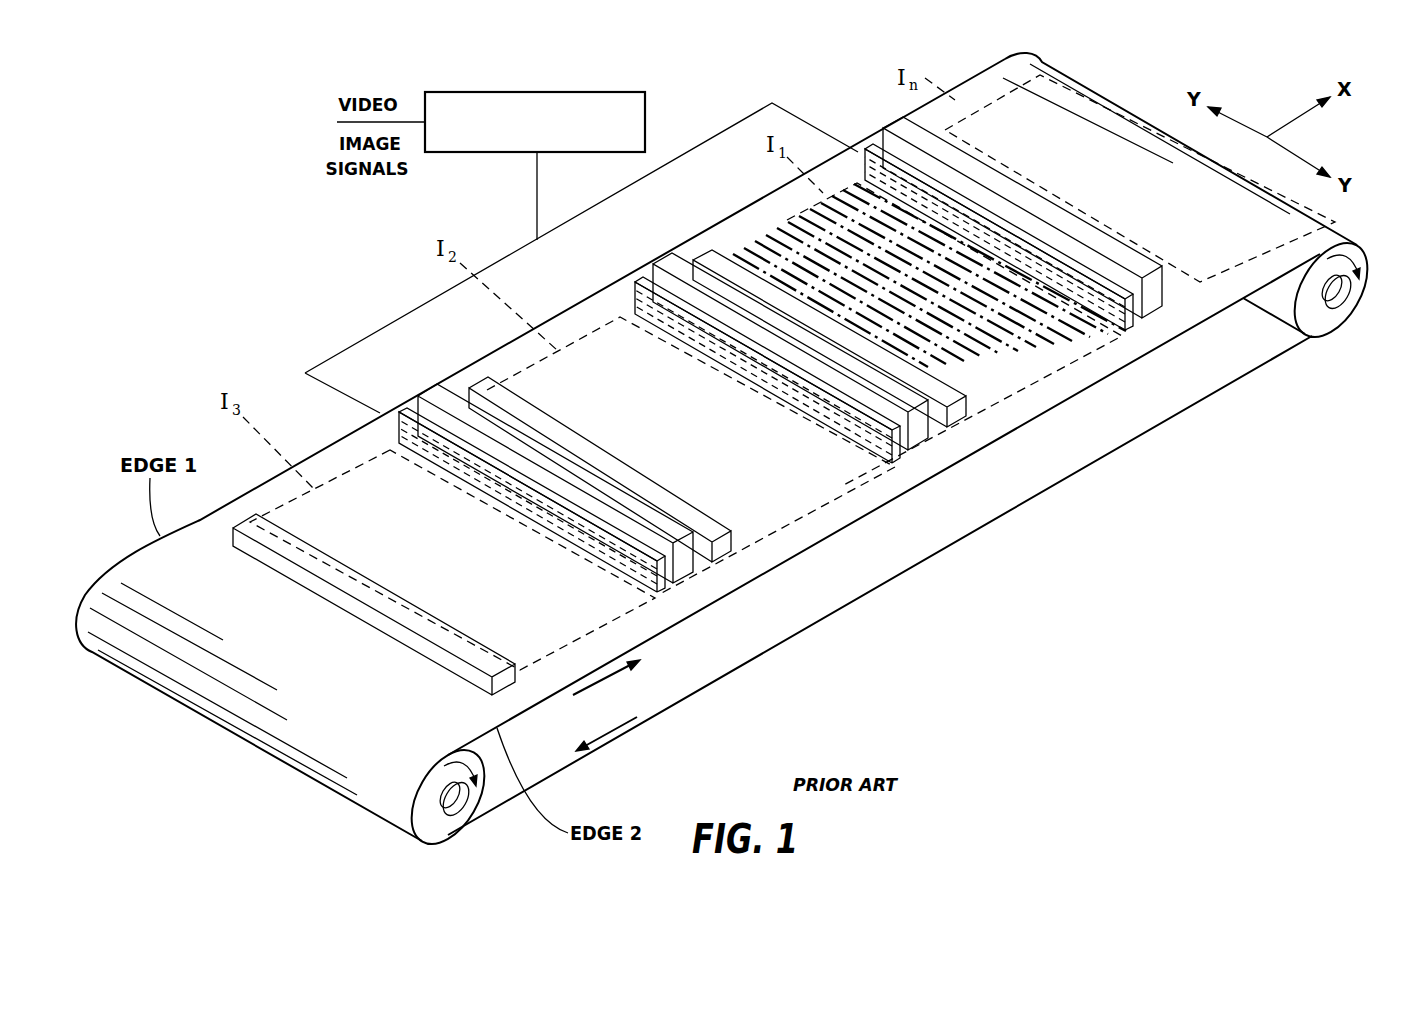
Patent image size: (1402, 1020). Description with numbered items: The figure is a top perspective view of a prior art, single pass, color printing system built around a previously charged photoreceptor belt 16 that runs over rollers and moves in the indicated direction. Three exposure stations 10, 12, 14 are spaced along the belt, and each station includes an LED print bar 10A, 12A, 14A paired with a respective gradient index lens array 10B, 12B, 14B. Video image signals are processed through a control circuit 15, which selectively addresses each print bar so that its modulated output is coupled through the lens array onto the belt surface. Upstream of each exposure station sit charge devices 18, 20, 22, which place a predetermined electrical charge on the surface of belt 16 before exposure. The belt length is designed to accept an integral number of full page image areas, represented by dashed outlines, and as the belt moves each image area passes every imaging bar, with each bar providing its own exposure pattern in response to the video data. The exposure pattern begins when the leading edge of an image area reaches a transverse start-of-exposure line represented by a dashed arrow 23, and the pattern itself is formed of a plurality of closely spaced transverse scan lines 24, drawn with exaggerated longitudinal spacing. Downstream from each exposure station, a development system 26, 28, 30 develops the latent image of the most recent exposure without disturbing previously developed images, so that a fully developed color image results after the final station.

The exposure station 10 is at (512, 534).
The LED print bar 10A is at (404, 408).
The gradient index lens array 10B is at (398, 440).
The exposure station 12 is at (747, 404).
The LED print bar 12A is at (633, 276).
The gradient index lens array 12B is at (634, 315).
The exposure station 14 is at (1019, 264).
The LED print bar 14A is at (870, 148).
The gradient index lens array 14B is at (866, 165).
The control circuit 15 is at (633, 102).
The photoreceptor belt 16 is at (322, 712).
The charge device 18 is at (513, 685).
The charge device 20 is at (733, 551).
The charge device 22 is at (967, 413).
The dashed arrow 23 is at (980, 264).
The transverse scan lines 24 is at (762, 250).
The development system 26 is at (690, 581).
The development system 28 is at (923, 442).
The development system 30 is at (1153, 308).